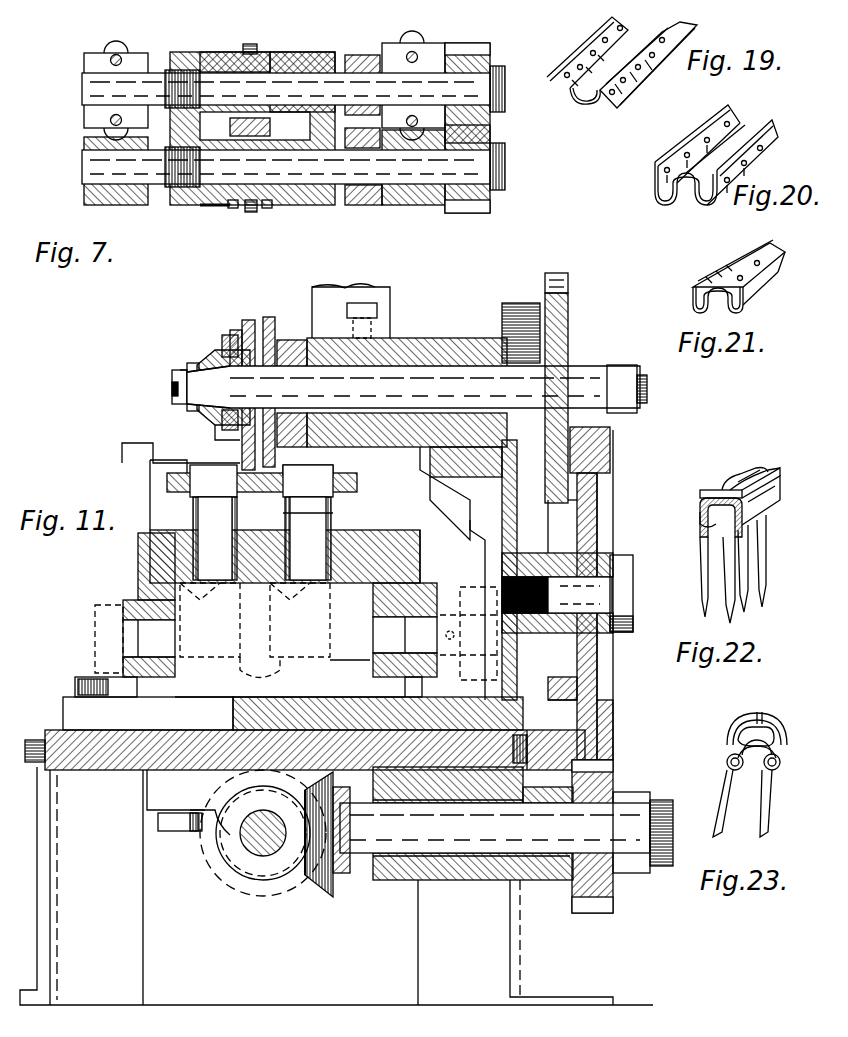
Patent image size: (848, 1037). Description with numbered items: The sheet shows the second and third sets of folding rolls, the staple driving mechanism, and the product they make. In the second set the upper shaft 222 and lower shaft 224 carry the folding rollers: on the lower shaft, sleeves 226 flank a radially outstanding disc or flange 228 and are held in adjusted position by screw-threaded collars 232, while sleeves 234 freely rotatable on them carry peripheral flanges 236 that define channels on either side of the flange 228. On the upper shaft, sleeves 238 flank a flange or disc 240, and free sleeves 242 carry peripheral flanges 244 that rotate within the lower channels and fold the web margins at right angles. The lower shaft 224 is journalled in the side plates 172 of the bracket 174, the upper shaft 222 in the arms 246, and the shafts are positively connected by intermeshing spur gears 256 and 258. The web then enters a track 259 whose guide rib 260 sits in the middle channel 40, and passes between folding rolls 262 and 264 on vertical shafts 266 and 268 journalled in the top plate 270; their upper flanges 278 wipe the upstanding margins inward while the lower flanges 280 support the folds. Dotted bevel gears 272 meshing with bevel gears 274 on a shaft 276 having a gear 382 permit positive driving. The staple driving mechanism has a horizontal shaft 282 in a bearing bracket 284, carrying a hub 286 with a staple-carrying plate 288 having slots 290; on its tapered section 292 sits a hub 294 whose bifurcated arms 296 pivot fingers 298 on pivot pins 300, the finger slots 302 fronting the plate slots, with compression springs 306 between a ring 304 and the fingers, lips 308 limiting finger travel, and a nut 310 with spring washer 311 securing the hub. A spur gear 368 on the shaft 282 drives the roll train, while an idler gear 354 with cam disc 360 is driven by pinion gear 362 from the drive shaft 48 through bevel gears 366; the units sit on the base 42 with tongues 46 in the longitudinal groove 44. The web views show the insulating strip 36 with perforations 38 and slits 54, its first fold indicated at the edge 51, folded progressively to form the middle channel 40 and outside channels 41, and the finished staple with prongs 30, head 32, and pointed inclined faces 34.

In FIG. 7, the side plates 172 is at (86, 203).
In FIG. 7, the upper shaft 222 is at (105, 88).
In FIG. 7, the lower shaft 224 is at (105, 165).
In FIG. 7, the sleeves 226 is at (230, 205).
In FIG. 7, the disc or flange 228 is at (250, 212).
In FIG. 7, the collars 232 is at (180, 205).
In FIG. 7, the sleeves 234 is at (212, 208).
In FIG. 7, the peripheral flanges 236 is at (268, 208).
In FIG. 7, the sleeves 238 is at (290, 55).
In FIG. 7, the flange or disc 240 is at (250, 44).
In FIG. 7, the sleeves 242 is at (225, 54).
In FIG. 7, the peripheral flanges 244 is at (240, 50).
In FIG. 7, the arms 246 is at (136, 52).
In FIG. 7, the spur gear 256 is at (490, 55).
In FIG. 7, the spur gear 258 is at (490, 140).
In FIG. 22, the prongs 30 is at (742, 560).
In FIG. 23, the prongs 30 is at (724, 793).
In FIG. 22, the head 32 is at (748, 478).
In FIG. 23, the head 32 is at (763, 718).
In FIG. 22, the inclined faces 34 is at (763, 580).
In FIG. 23, the inclined faces 34 is at (765, 812).
In FIG. 19, the insulating strip 36 is at (592, 92).
In FIG. 20, the insulating strip 36 is at (772, 123).
In FIG. 22, the insulating strip 36 is at (705, 493).
In FIG. 23, the insulating strip 36 is at (740, 748).
In FIG. 19, the perforations 38 is at (660, 40).
In FIG. 20, the perforations 38 is at (777, 133).
In FIG. 21, the perforations 38 is at (765, 260).
In FIG. 22, the perforations 38 is at (775, 470).
In FIG. 23, the perforations 38 is at (733, 732).
In FIG. 19, the middle channel 40 is at (596, 104).
In FIG. 20, the middle channel 40 is at (685, 193).
In FIG. 21, the middle channel 40 is at (718, 316).
In FIG. 22, the middle channel 40 is at (700, 516).
In FIG. 23, the middle channel 40 is at (727, 764).
In FIG. 21, the outside channels 41 is at (747, 298).
In FIG. 23, the outside channels 41 is at (780, 766).
In FIG. 19, the edge 51 is at (642, 78).
In FIG. 20, the transverse slits 54 is at (733, 123).
In FIG. 21, the transverse slits 54 is at (780, 258).
In FIG. 22, the transverse slits 54 is at (775, 478).
In FIG. 11, the base or bed 42 is at (112, 770).
In FIG. 11, the longitudinal groove 44 is at (233, 718).
In FIG. 11, the tongues 46 is at (268, 768).
In FIG. 11, the drive shaft 48 is at (250, 840).
In FIG. 11, the bracket 174 is at (302, 690).
In FIG. 11, the track 259 is at (333, 515).
In FIG. 11, the guide rib 260 is at (333, 503).
In FIG. 11, the folding roll 262 is at (200, 465).
In FIG. 11, the folding roll 264 is at (340, 472).
In FIG. 11, the vertical shaft 266 is at (205, 560).
In FIG. 11, the vertical shaft 268 is at (420, 565).
In FIG. 11, the top plate 270 is at (420, 556).
In FIG. 11, the bevel gears 272 is at (205, 605).
In FIG. 11, the bevel gears 274 is at (270, 672).
In FIG. 11, the shaft 276 is at (345, 662).
In FIG. 11, the upper flanges 278 is at (170, 480).
In FIG. 11, the lower flanges 280 is at (168, 488).
In FIG. 11, the horizontal shaft 282 is at (412, 385).
In FIG. 11, the bearing bracket 284 is at (465, 447).
In FIG. 11, the hub 286 is at (293, 340).
In FIG. 11, the staple-carrying plate 288 is at (272, 317).
In FIG. 11, the radial grooves or slots 290 is at (250, 320).
In FIG. 11, the tapered section 292 is at (220, 392).
In FIG. 11, the hub 294 is at (210, 352).
In FIG. 11, the bifurcated arms 296 is at (225, 430).
In FIG. 11, the fingers 298 is at (258, 372).
In FIG. 11, the pivot pins 300 is at (176, 396).
In FIG. 11, the radial grooves or slots 302 is at (238, 330).
In FIG. 11, the ring 304 is at (224, 345).
In FIG. 11, the compression springs 306 is at (228, 336).
In FIG. 11, the lips 308 is at (190, 370).
In FIG. 11, the nut 310 is at (176, 385).
In FIG. 11, the spring washer 311 is at (182, 372).
In FIG. 11, the idler gear 354 is at (610, 478).
In FIG. 11, the cam disc 360 is at (562, 692).
In FIG. 11, the pinion gear 362 is at (600, 888).
In FIG. 11, the bevel gears 366 is at (315, 880).
In FIG. 11, the spur gear 368 is at (517, 413).
In FIG. 11, the gear 382 is at (480, 587).